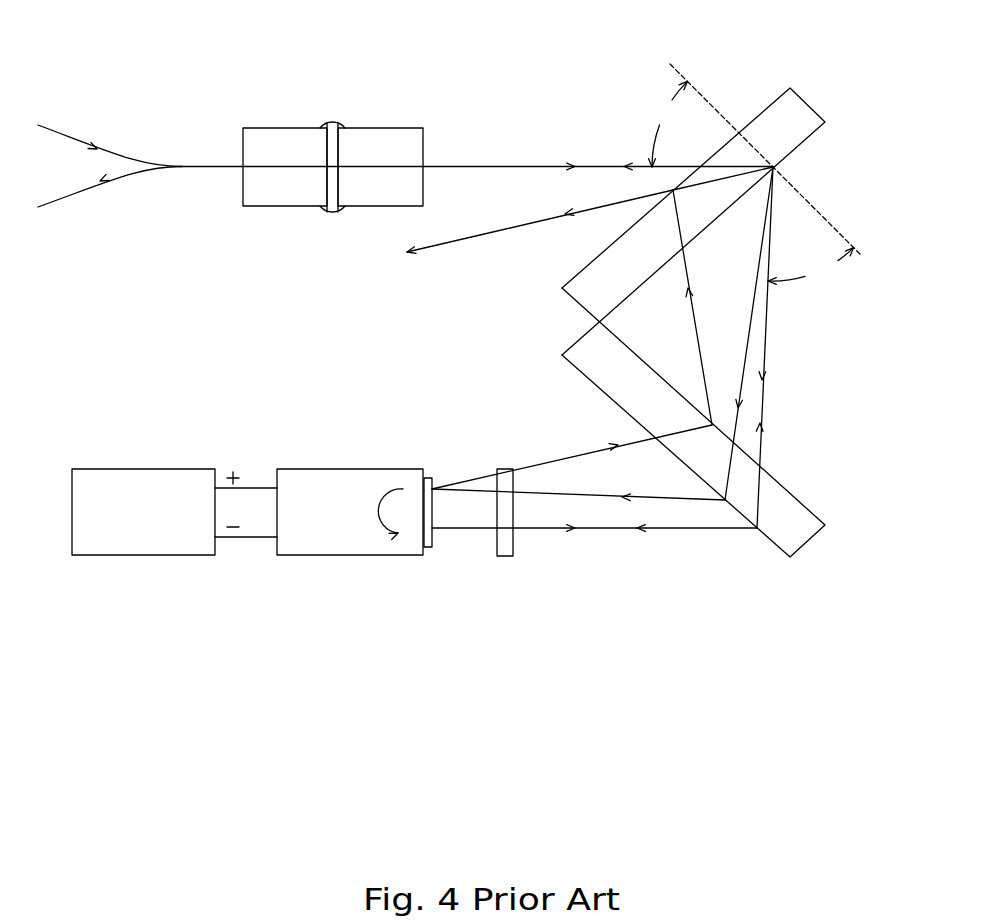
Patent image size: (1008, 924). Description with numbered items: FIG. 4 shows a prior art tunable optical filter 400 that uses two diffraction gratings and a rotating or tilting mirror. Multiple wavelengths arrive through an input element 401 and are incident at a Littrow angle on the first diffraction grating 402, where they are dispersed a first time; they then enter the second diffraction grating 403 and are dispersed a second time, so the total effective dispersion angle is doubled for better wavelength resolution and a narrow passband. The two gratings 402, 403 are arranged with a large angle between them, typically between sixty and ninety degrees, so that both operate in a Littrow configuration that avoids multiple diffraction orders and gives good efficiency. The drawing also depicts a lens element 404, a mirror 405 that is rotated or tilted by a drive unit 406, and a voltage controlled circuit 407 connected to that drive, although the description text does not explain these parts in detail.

The prior art wavelength selective optical device 400 is at (449, 284).
The optical coupler / circulator 401 is at (333, 153).
The first diffraction grating 402 is at (710, 209).
The second diffraction grating 403 is at (710, 435).
The lens 404 is at (503, 527).
The mirror 405 is at (433, 473).
The motor / rotary actuator 406 is at (350, 527).
The voltage controlled circuit 407 is at (174, 527).